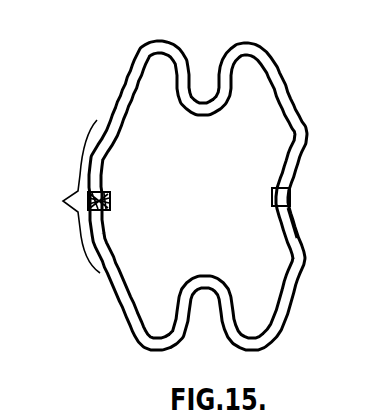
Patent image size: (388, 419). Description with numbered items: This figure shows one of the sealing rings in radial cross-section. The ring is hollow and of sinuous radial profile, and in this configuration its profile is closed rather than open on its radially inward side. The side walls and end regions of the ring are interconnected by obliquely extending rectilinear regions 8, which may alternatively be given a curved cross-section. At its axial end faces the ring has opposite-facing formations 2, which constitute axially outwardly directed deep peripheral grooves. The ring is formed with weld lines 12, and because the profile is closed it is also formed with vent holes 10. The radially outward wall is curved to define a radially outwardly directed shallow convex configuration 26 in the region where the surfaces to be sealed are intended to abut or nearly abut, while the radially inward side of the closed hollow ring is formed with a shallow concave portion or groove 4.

The opposite-facing formations 2 is at (198, 203).
The obliquely extending rectilinear regions 8 is at (133, 100).
The vent holes 10 is at (290, 191).
The weld lines 12 is at (110, 197).
The shallow concave portion or groove 4 is at (291, 212).
The shallow convex configuration 26 is at (59, 196).